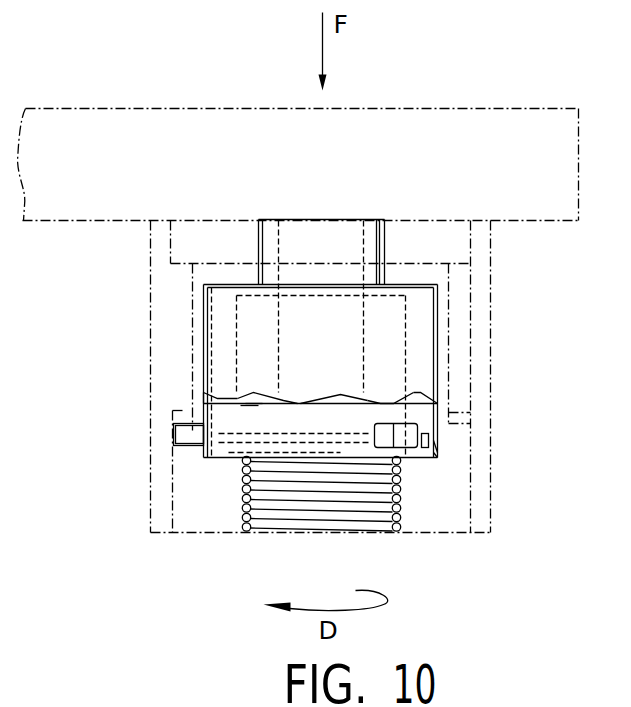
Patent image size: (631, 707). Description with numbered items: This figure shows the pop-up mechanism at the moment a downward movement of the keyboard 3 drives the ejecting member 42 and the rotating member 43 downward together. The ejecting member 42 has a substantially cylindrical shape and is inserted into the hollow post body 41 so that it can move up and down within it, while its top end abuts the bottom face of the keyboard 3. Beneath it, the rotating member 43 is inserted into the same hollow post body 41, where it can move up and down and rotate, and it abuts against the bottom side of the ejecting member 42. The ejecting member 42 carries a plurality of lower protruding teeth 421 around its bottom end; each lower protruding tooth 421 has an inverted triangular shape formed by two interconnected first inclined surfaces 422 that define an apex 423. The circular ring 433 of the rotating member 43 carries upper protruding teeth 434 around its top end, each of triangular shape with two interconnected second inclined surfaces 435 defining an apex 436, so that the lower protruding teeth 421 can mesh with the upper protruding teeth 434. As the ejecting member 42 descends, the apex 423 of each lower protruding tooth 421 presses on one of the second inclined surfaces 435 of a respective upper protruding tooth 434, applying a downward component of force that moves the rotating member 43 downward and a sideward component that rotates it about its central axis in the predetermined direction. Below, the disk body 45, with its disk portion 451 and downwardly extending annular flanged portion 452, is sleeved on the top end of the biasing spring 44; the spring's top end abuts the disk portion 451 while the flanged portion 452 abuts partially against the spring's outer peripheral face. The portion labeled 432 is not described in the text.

The keyboard 3 is at (425, 130).
The hollow post body 41 is at (480, 276).
The ejecting member 42 is at (404, 243).
The rotating member 43 is at (325, 420).
The lower protruding tooth 421 is at (295, 388).
The first inclined surface 422 is at (276, 400).
The apex 423 is at (300, 402).
The engaging portion 432 is at (437, 458).
The circular ring 433 is at (437, 445).
The upper protruding tooth 434 is at (255, 403).
The second inclined surface 435 is at (242, 403).
The apex 436 is at (250, 405).
The biasing spring 44 is at (248, 512).
The disk body 45 is at (380, 501).
The disk portion 451 is at (395, 450).
The annular flanged portion 452 is at (415, 443).